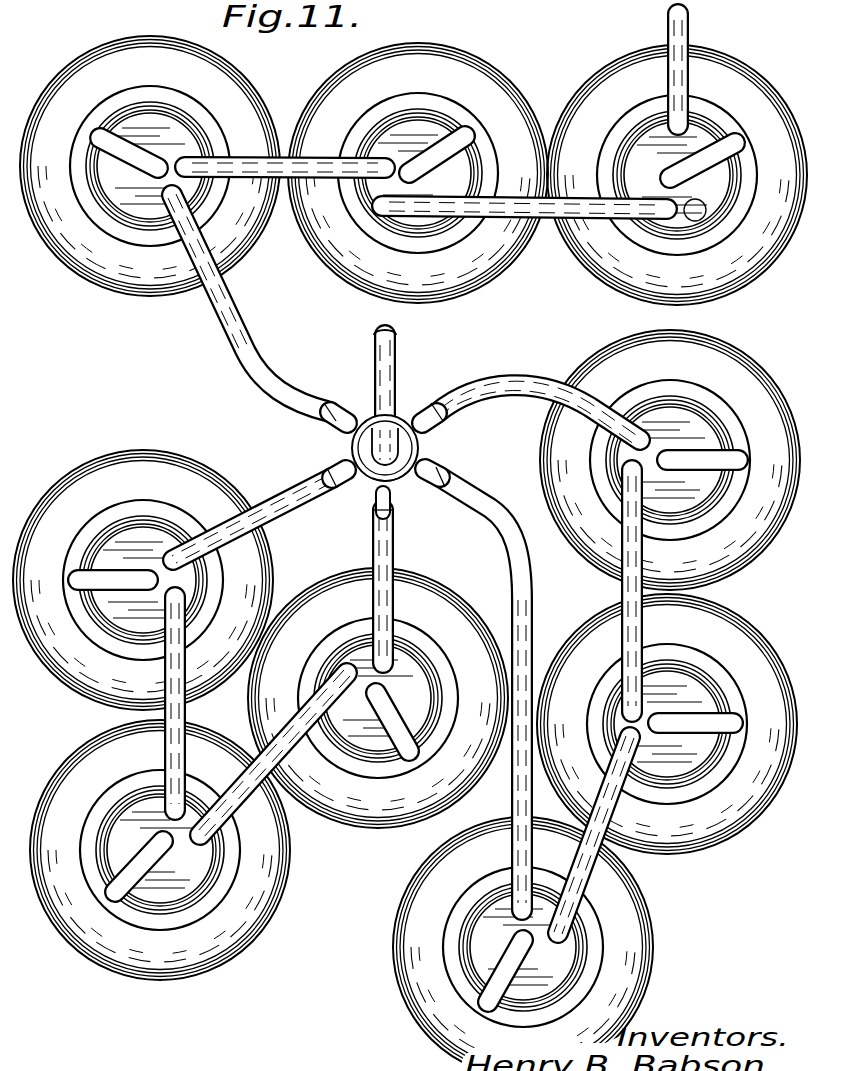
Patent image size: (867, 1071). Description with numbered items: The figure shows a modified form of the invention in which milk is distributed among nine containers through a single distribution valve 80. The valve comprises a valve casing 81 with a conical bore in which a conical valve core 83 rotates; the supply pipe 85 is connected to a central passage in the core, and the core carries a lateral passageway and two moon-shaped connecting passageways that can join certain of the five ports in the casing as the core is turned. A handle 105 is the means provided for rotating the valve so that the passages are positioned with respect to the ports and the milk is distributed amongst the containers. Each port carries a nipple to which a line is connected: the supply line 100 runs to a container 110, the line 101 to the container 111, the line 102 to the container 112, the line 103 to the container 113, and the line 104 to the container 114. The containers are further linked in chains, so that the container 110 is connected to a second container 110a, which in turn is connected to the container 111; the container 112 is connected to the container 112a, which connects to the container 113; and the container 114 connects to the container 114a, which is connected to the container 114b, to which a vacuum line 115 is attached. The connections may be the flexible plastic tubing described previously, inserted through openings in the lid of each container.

The distribution valve 80 is at (343, 438).
The valve casing 81 is at (413, 449).
The conical valve core 83 is at (398, 474).
The supply pipe 85 is at (387, 353).
The supply line 100 is at (433, 420).
The line 101 is at (433, 467).
The line 102 is at (375, 500).
The line 103 is at (340, 464).
The line 104 is at (352, 412).
The handle 105 is at (415, 410).
The container 110 is at (731, 356).
The second container 110a is at (740, 623).
The container 111 is at (395, 912).
The container 112 is at (450, 587).
The container 112a is at (120, 950).
The container 113 is at (263, 567).
The container 114 is at (106, 66).
The container 114a is at (437, 58).
The container 114b is at (600, 92).
The vacuum line 115 is at (684, 35).